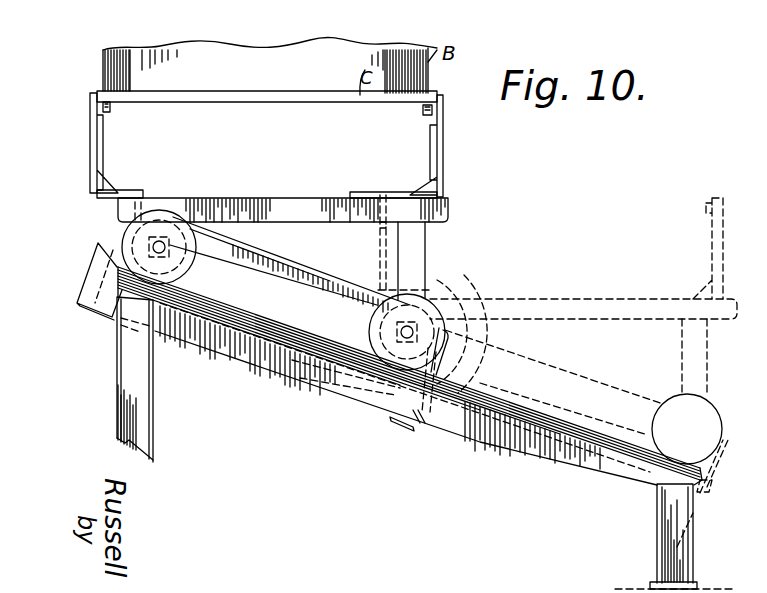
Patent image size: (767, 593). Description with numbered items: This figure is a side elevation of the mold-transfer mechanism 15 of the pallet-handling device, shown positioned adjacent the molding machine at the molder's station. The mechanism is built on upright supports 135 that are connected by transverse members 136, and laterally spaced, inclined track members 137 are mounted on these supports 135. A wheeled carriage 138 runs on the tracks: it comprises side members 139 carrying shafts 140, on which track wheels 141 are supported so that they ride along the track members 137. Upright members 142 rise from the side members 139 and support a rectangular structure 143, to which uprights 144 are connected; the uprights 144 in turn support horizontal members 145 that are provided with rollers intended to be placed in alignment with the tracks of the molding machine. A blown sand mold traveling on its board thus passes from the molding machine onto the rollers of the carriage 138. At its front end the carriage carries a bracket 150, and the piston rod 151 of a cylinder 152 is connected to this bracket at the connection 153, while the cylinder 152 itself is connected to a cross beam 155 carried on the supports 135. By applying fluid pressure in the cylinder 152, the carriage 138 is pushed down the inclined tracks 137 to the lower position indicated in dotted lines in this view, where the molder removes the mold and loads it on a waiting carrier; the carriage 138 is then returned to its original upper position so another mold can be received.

The mold-transfer mechanism 15 is at (410, 449).
The upright supports 135 is at (140, 433).
The transverse members 136 is at (158, 340).
The track members 137 is at (553, 465).
The wheeled carriage 138 is at (344, 284).
The side members 139 is at (307, 240).
The shafts 140 is at (161, 242).
The track wheels 141 is at (196, 262).
The upright members 142 is at (415, 272).
The rectangular structure 143 is at (443, 213).
The uprights 144 is at (93, 140).
The horizontal members 145 is at (440, 112).
The bracket 150 is at (478, 360).
The piston rod 151 is at (428, 415).
The cylinder 152 is at (303, 380).
The connection of piston rod to bracket 153 is at (490, 382).
The cross beam 155 is at (93, 278).